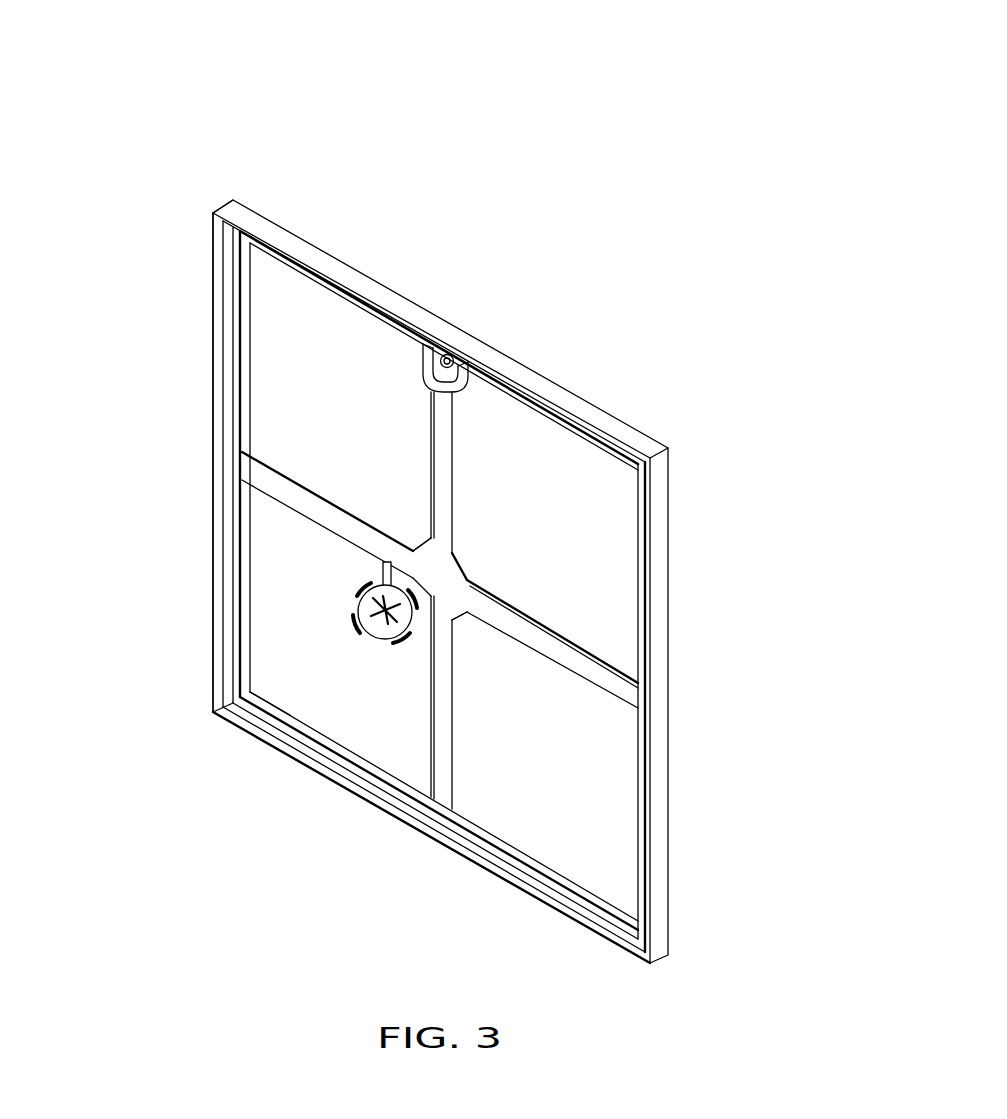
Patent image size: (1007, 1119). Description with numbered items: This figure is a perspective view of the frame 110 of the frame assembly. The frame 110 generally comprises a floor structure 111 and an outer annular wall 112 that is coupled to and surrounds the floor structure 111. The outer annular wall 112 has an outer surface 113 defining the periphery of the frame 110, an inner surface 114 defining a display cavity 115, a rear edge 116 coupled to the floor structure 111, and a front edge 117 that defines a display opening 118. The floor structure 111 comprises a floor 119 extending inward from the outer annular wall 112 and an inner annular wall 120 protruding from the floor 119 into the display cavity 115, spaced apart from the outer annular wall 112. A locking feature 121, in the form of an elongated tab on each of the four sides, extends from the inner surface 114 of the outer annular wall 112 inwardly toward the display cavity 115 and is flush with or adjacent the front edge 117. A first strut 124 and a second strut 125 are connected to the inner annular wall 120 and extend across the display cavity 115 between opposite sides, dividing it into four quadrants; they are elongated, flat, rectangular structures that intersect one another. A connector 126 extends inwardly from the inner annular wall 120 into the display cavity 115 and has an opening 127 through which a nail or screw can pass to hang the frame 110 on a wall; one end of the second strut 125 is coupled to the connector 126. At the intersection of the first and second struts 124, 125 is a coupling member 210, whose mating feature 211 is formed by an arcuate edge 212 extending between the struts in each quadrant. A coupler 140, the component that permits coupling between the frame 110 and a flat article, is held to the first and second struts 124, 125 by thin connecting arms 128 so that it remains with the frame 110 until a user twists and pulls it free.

The frame 110 is at (122, 112).
The floor structure 111 is at (262, 300).
The outer annular wall 112 is at (217, 232).
The outer surface 113 is at (577, 408).
The inner surface 114 is at (214, 696).
The display cavity 115 is at (266, 690).
The rear edge 116 is at (393, 305).
The front edge 117 is at (668, 455).
The display opening 118 is at (608, 452).
The floor 119 is at (612, 917).
The inner annular wall 120 is at (572, 890).
The locking feature 121 is at (213, 440).
The first strut 124 is at (610, 686).
The second strut 125 is at (441, 752).
The connector 126 is at (447, 355).
The opening 127 is at (462, 372).
The connecting arms 128 is at (362, 580).
The coupler 140 is at (338, 606).
The coupling member 210 is at (475, 556).
The mating feature 211 is at (460, 616).
The arcuate edge 212 is at (428, 543).